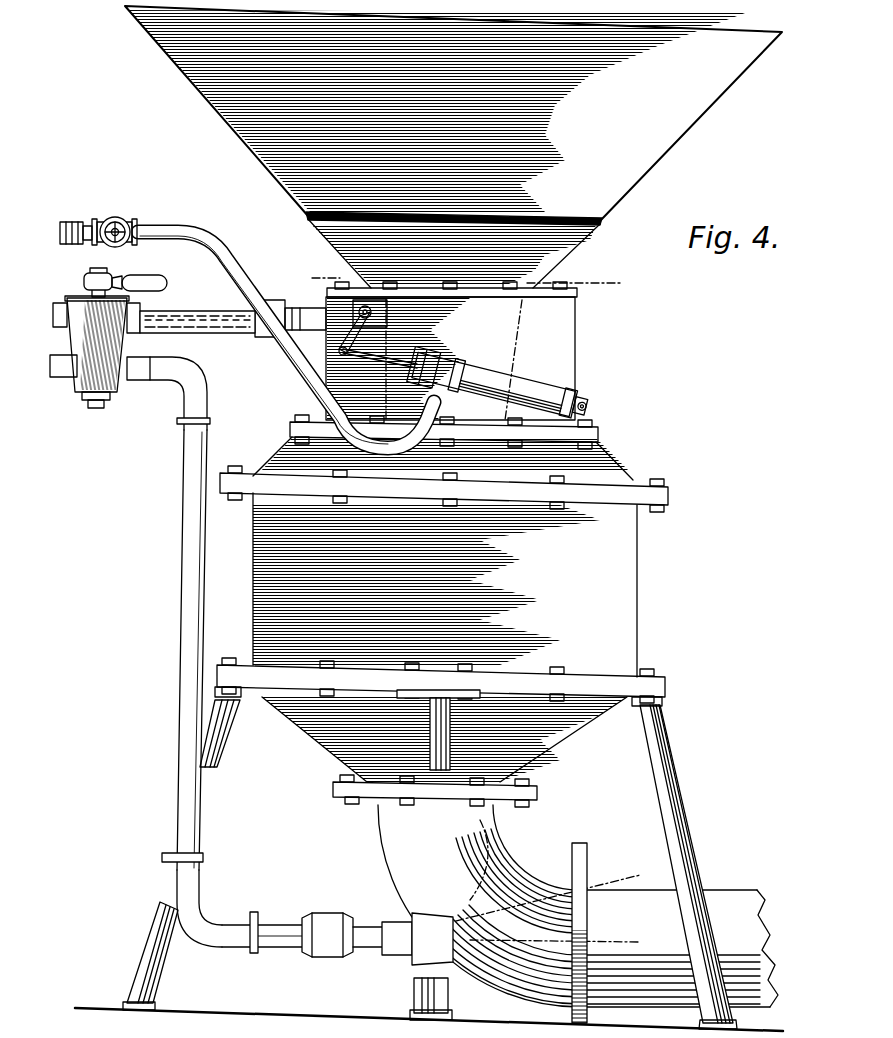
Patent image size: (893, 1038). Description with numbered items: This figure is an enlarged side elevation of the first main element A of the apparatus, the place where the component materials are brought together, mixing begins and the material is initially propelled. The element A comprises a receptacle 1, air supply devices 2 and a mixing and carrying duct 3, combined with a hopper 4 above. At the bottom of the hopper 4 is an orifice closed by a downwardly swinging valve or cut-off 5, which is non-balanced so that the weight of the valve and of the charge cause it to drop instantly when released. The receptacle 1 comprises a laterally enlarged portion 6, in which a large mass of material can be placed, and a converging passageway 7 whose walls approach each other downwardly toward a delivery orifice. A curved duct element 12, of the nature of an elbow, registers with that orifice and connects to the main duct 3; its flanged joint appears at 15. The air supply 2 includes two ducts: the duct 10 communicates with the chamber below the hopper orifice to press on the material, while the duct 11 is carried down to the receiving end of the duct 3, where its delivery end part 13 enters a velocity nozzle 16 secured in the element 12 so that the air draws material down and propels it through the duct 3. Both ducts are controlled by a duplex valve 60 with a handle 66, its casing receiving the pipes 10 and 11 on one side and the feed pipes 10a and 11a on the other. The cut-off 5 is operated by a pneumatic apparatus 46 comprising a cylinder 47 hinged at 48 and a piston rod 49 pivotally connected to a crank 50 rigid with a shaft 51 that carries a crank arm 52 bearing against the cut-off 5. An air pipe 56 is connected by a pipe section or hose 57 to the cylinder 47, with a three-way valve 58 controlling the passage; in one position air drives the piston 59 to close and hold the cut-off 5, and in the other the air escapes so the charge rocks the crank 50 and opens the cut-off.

The receptacle 1 is at (444, 623).
The air supply devices 2 is at (65, 454).
The mixing and carrying duct 3 is at (752, 948).
The hopper 4 is at (453, 151).
The valve or cut-off 5 is at (465, 342).
The laterally enlarged portion 6 is at (266, 557).
The converging passageway 7 is at (444, 736).
The air duct 10 is at (169, 312).
The air feed pipe 10a is at (56, 302).
The air duct 11 is at (183, 514).
The air feed pipe 11a is at (58, 378).
The curved duct element 12 is at (390, 873).
The delivery end part 13 is at (302, 920).
The flange joint 15 is at (529, 790).
The velocity nozzle 16 is at (388, 957).
The pneumatic apparatus 46 is at (488, 342).
The cylinder 47 is at (536, 378).
The hinge 48 is at (584, 402).
The piston rod 49 is at (418, 361).
The crank 50 is at (343, 335).
The shaft 51 is at (388, 306).
The crank arm 52 is at (381, 361).
The air pipe 56 is at (74, 221).
The pipe section or hose 57 is at (222, 264).
The three-way valve 58 is at (122, 221).
The piston 59 is at (457, 362).
The duplex valve structure 60 is at (102, 352).
The handle 66 is at (162, 273).
The first main element A is at (655, 900).